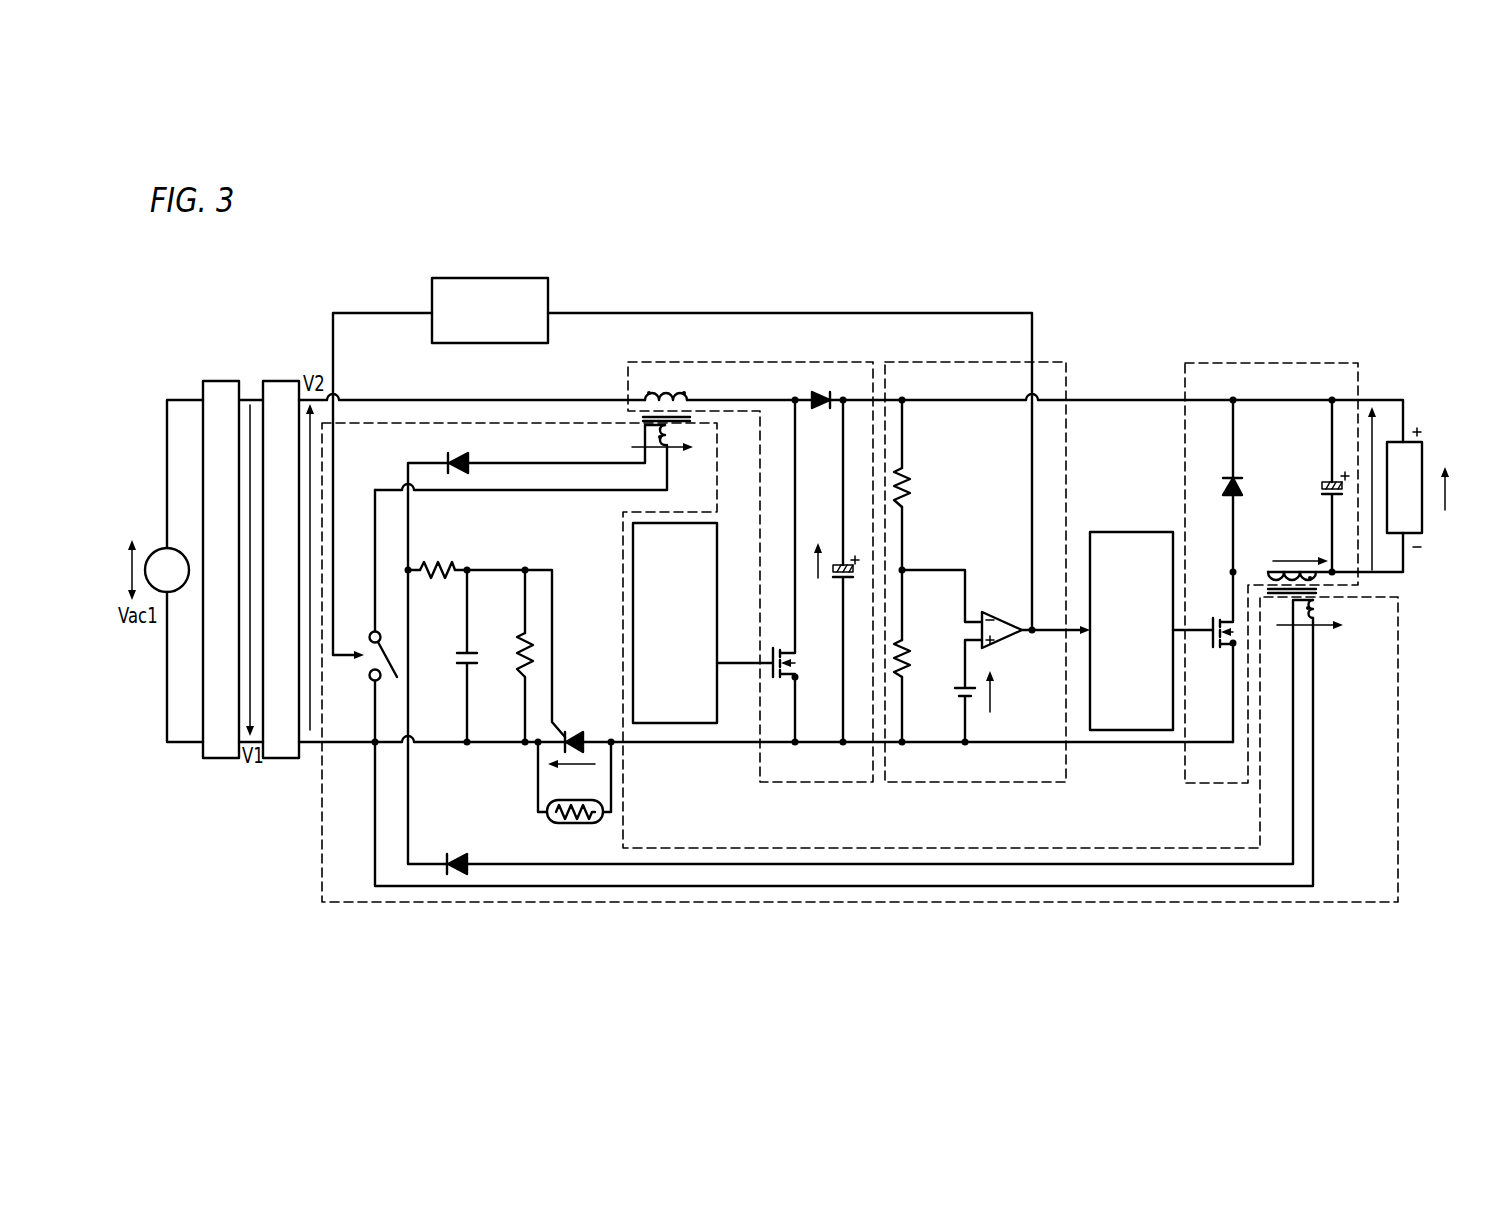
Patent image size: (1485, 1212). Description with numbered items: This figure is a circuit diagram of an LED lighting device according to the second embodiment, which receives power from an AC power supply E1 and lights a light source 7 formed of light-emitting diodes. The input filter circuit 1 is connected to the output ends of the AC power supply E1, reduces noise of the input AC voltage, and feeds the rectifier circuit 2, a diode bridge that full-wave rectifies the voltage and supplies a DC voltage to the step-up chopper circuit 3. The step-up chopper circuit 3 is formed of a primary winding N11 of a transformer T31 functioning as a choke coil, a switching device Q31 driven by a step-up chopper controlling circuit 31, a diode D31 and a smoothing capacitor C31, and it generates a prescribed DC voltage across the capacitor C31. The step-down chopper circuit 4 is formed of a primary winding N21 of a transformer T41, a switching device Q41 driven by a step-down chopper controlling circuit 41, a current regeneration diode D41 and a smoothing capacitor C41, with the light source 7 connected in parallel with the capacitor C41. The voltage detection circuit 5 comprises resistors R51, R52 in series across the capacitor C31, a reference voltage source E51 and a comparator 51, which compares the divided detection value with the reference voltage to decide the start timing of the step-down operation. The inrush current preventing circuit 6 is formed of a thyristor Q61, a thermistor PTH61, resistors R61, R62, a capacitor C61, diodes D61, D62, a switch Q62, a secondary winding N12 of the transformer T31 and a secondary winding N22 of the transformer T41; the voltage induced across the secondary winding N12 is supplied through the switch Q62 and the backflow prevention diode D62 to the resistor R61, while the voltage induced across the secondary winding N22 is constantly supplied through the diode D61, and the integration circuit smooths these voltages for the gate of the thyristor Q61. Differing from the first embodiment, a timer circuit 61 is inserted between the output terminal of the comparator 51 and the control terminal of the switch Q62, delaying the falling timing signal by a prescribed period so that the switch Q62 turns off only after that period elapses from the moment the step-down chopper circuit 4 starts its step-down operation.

The input filter circuit 1 is at (223, 380).
The rectifier circuit 2 is at (278, 380).
The step-up chopper circuit 3 is at (713, 361).
The step-down chopper circuit 4 is at (1277, 363).
The voltage detection circuit 5 is at (954, 362).
The inrush current preventing circuit 6 is at (318, 862).
The light source 7 is at (1417, 520).
The step-up chopper controlling circuit 31 is at (717, 553).
The step-down chopper controlling circuit 41 is at (1128, 540).
The comparator 51 is at (998, 616).
The timer circuit 61 is at (490, 278).
The AC power supply E1 is at (163, 547).
The transformer T31 is at (637, 394).
The primary winding N11 is at (666, 383).
The secondary winding N12 is at (652, 452).
The switching device Q31 is at (779, 571).
The diode D31 is at (823, 419).
The capacitor C31 is at (831, 571).
The resistor R51 is at (925, 485).
The resistor R52 is at (925, 658).
The reference voltage source E51 is at (983, 693).
The switching device Q41 is at (1205, 656).
The diode D41 is at (1217, 485).
The capacitor C41 is at (1319, 486).
The transformer T41 is at (1344, 565).
The primary winding N21 is at (1327, 577).
The secondary winding N22 is at (1316, 602).
The switch Q62 is at (820, 688).
The diode D62 is at (536, 644).
The resistor R61 is at (485, 634).
The resistor R62 is at (505, 658).
The capacitor C61 is at (452, 658).
The thyristor Q61 is at (575, 725).
The thermistor PTH61 is at (574, 799).
The diode D61 is at (877, 737).